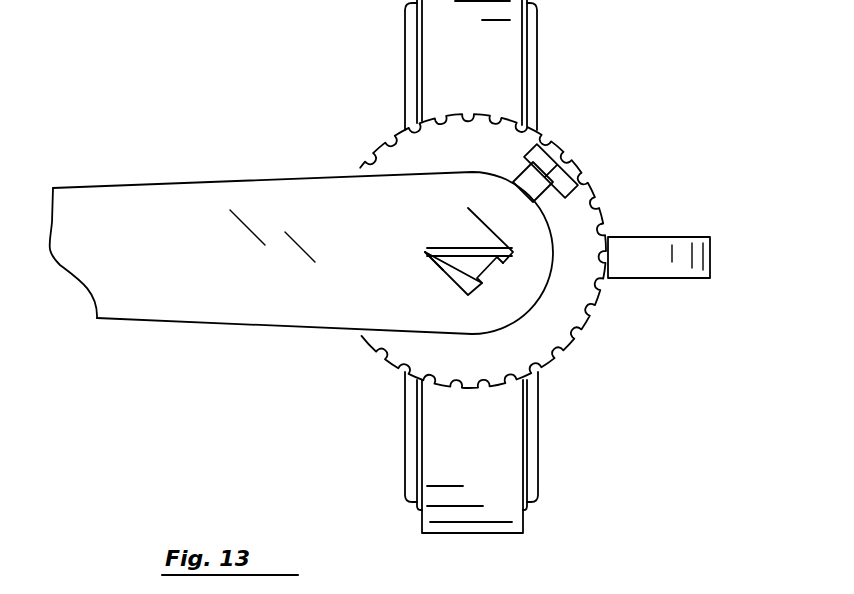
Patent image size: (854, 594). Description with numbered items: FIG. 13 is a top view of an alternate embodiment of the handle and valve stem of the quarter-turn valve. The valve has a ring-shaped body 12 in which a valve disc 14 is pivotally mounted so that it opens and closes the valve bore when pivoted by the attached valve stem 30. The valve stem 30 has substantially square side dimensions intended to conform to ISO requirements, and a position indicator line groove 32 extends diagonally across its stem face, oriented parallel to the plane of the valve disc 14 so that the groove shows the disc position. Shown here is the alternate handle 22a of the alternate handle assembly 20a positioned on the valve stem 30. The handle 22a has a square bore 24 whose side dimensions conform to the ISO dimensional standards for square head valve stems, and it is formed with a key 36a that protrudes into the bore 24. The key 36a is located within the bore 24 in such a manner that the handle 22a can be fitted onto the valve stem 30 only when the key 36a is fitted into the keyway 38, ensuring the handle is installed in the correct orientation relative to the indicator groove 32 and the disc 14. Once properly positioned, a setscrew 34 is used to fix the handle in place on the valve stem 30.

The valve body 12 is at (493, 47).
The valve disc 14 is at (658, 263).
The alternate handle assembly 20a is at (529, 234).
The alternate handle 22a is at (158, 205).
The square bore 24 is at (443, 270).
The valve stem 30 is at (483, 274).
The position indicator line groove 32 is at (450, 256).
The setscrew 34 is at (550, 168).
The key 36a is at (483, 278).
The keyway 38 is at (488, 237).